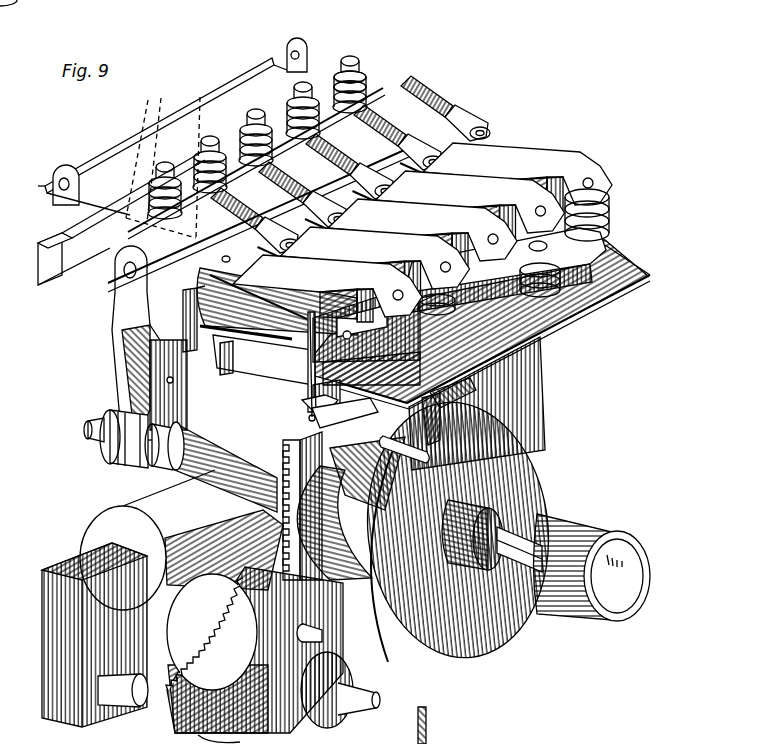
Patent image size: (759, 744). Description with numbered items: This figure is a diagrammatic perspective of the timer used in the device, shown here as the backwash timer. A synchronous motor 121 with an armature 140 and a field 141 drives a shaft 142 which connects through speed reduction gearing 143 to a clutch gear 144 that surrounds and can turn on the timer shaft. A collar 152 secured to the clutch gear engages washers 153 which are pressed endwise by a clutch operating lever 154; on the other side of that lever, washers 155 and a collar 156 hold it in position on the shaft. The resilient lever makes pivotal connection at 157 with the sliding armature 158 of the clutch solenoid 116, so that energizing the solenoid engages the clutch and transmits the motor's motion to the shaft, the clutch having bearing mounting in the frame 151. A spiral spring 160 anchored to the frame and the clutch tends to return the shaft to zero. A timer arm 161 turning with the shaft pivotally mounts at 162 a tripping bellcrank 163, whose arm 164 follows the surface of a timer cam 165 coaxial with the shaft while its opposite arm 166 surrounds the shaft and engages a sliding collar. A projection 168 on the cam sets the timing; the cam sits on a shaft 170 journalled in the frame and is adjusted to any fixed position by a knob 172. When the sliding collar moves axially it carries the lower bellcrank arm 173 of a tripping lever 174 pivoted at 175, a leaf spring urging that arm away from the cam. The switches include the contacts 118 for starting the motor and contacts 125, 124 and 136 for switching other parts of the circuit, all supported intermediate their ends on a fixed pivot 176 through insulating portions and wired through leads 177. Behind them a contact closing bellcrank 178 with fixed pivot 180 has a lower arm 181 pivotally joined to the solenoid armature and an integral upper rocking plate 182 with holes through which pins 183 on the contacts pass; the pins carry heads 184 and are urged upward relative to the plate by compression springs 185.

The clutch solenoid 116 is at (320, 300).
The contact 118 is at (363, 260).
The synchronous motor 121 is at (219, 736).
The contact 124 is at (490, 189).
The contact 125 is at (442, 217).
The contact 136 is at (562, 140).
The armature 140 is at (170, 601).
The field 141 is at (145, 500).
The shaft 142 is at (365, 714).
The speed reduction gearing 143 is at (240, 636).
The clutch gear 144 is at (252, 470).
The frame 151 is at (400, 668).
The collar 152 is at (210, 440).
The washers 153 is at (180, 430).
The clutch operating lever 154 is at (120, 378).
The washers 155 is at (130, 455).
The collar 156 is at (90, 428).
The pivotal connection 157 is at (125, 275).
The sliding armature 158 is at (102, 258).
The spiral spring 160 is at (230, 500).
The timer arm 161 is at (300, 420).
The pivot 162 is at (282, 450).
The tripping bellcrank 163 is at (367, 456).
The arm 164 is at (380, 440).
The timer cam 165 is at (538, 455).
The arm 166 is at (478, 478).
The projection 168 is at (480, 402).
The shaft 170 is at (520, 540).
The knob 172 is at (606, 520).
The bellcrank arm 173 is at (435, 385).
The tripping lever 174 is at (590, 312).
The pivot 175 is at (308, 410).
The fixed pivot 176 is at (230, 260).
The leads 177 is at (440, 100).
The contact closing bellcrank 178 is at (118, 140).
The fixed pivot 180 is at (306, 50).
The lower arm 181 is at (155, 115).
The rocking plate 182 is at (253, 110).
The pins 183 is at (385, 40).
The heads 184 is at (366, 68).
The compression springs 185 is at (366, 88).